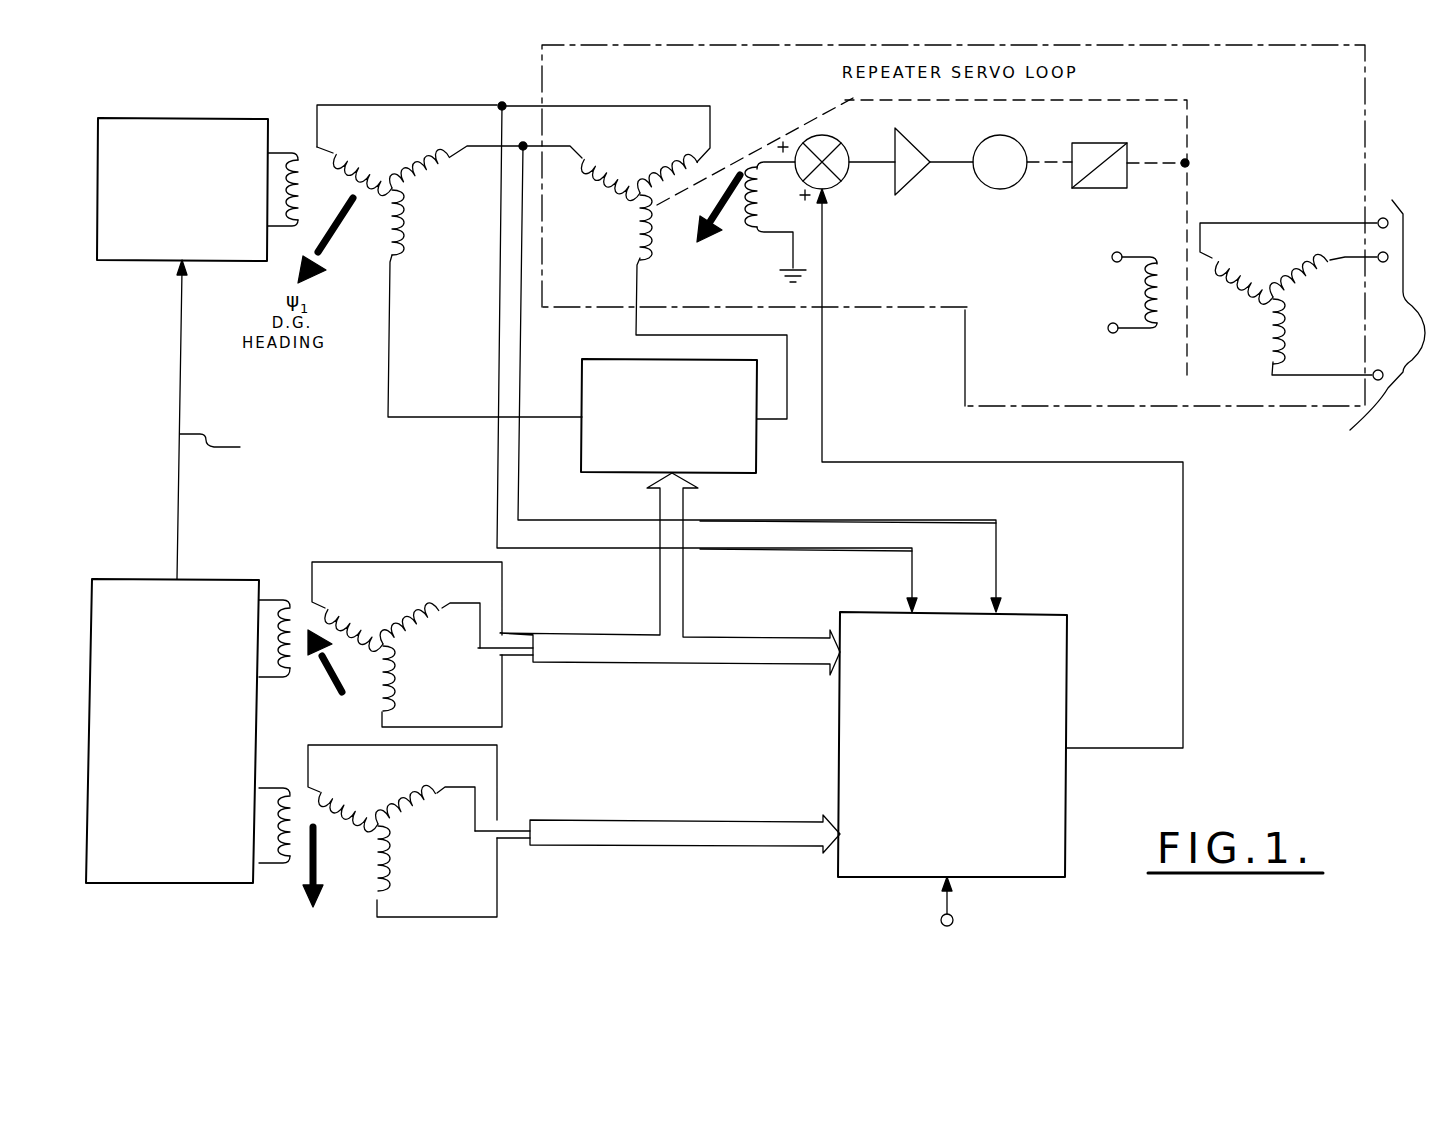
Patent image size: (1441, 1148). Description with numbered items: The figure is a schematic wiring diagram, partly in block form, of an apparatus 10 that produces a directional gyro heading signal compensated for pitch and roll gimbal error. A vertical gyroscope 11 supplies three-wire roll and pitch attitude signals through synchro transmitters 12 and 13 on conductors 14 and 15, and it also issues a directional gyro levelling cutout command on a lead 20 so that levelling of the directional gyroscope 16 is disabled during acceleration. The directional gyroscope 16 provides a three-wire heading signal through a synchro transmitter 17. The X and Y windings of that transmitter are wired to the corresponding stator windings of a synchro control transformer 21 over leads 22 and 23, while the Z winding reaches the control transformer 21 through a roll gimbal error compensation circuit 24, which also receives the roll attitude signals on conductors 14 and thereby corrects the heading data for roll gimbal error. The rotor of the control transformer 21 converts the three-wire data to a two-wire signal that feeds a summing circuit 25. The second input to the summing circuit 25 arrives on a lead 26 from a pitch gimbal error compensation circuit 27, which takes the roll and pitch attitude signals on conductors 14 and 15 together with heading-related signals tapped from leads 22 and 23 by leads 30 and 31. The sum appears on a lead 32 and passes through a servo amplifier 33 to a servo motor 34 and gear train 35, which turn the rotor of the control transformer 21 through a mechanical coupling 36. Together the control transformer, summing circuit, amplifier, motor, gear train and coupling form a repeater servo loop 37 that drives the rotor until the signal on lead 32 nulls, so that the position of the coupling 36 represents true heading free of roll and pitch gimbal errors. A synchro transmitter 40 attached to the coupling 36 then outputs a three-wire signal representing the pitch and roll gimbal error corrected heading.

The apparatus 10 is at (1282, 683).
The vertical gyroscope 11 is at (125, 579).
The synchro transmitter 12 is at (286, 590).
The synchro transmitter 13 is at (293, 765).
The conductors 14 is at (657, 612).
The conductors 15 is at (762, 848).
The directional gyroscope 16 is at (162, 118).
The synchro transmitter 17 is at (305, 146).
The lead 20 is at (180, 365).
The synchro control transformer 21 is at (719, 146).
The lead 22 is at (385, 105).
The lead 23 is at (477, 153).
The roll gimbal error compensation circuit 24 is at (582, 370).
The summing circuit 25 is at (842, 137).
The lead 26 is at (822, 415).
The pitch gimbal error compensation circuit 27 is at (1067, 665).
The lead 30 is at (910, 587).
The lead 31 is at (996, 540).
The lead 32 is at (870, 165).
The servo amplifier 33 is at (907, 131).
The servo motor 34 is at (1003, 135).
The gear train 35 is at (1100, 143).
The mechanical coupling 36 is at (1189, 126).
The repeater servo loop 37 is at (927, 310).
The synchro transmitter 40 is at (1227, 315).